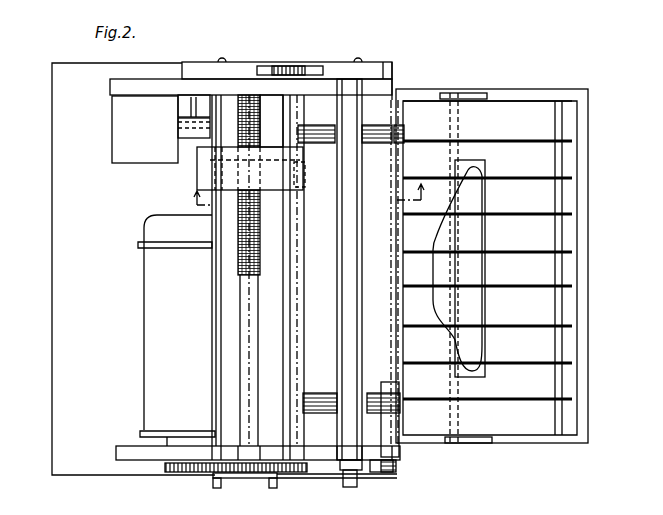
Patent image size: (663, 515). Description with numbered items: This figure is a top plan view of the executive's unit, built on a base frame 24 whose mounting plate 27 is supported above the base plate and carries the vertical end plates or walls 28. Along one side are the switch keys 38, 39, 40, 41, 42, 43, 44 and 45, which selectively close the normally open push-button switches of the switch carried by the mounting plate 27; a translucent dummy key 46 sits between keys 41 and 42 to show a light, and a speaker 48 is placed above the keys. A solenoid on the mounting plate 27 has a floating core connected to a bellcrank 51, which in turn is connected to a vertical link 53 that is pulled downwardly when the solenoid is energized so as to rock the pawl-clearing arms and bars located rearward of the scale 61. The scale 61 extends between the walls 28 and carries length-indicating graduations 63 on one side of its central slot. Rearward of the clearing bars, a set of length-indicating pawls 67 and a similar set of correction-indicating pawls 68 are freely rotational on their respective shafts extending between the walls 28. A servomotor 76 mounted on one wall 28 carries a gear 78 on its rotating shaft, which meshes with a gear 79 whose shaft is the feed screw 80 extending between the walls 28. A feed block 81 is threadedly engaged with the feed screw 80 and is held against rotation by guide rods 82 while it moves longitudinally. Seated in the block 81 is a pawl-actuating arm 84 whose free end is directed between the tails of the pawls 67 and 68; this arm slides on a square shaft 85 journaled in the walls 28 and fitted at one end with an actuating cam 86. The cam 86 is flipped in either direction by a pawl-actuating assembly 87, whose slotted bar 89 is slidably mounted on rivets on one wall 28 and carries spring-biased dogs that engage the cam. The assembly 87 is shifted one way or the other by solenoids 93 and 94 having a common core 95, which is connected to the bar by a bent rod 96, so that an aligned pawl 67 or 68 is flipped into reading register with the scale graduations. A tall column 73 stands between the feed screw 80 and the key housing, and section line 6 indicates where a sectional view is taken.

The mounting plate 27 is at (52, 353).
The end plates or walls 28 is at (112, 93).
The slotted bar 89 is at (234, 70).
The actuating cam 86 is at (295, 68).
The pawl-actuating assembly 87 is at (377, 63).
The solenoid 94 is at (112, 149).
The bent rod 96 is at (190, 108).
The common core 95 is at (182, 133).
The guide rods 82 is at (212, 376).
The feed screw 80 is at (250, 262).
The solenoid 93 is at (268, 112).
The square shaft 85 is at (293, 234).
The feed block 81 is at (197, 170).
The pawl-actuating arm 84 is at (303, 172).
The section line 6 is at (299, 197).
The column 73 is at (350, 270).
The length-indicating pawls 67 is at (320, 411).
The correction-indicating pawls 68 is at (400, 392).
The servomotor 76 is at (144, 304).
The gear 78 is at (165, 476).
The gear 79 is at (250, 478).
The bellcrank 51 is at (300, 479).
The vertical link 53 is at (357, 486).
The scale 61 is at (399, 425).
The base frame 24 is at (123, 484).
The switch key 38 is at (572, 416).
The switch key 39 is at (570, 378).
The switch key 40 is at (570, 345).
The switch key 41 is at (565, 309).
The dummy key 46 is at (567, 272).
The switch key 42 is at (568, 234).
The switch key 43 is at (570, 193).
The switch key 44 is at (565, 160).
The switch key 45 is at (567, 118).
The speaker 48 is at (480, 280).
The length-indicating graduations 63 is at (599, 508).